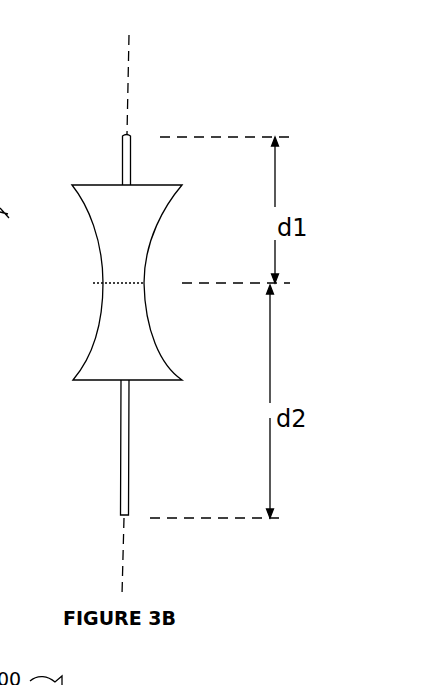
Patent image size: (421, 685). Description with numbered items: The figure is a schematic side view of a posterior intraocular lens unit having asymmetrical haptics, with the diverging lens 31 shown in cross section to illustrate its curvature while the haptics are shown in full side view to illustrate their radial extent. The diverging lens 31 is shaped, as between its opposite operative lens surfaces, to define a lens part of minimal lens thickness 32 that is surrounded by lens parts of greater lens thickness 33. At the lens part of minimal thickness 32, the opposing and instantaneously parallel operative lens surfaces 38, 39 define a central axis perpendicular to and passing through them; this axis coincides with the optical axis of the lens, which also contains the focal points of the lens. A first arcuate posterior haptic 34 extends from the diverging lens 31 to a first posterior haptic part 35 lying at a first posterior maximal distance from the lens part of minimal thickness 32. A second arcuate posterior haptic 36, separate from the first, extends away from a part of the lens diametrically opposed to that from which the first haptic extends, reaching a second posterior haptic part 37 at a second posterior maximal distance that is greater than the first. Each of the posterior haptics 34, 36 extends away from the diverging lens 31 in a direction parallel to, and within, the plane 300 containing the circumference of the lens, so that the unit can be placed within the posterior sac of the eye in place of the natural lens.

The plane containing the circumference of the lens 300 is at (122, 571).
The diverging lens 31 is at (176, 187).
The lens part of minimal lens thickness 32 is at (133, 279).
The lens parts of greater lens thickness 33 is at (149, 362).
The first arcuate posterior haptic 34 is at (132, 146).
The first posterior haptic part 35 is at (123, 131).
The second arcuate posterior haptic 36 is at (130, 455).
The second posterior haptic part 37 is at (125, 521).
The operative lens surface 38 is at (150, 286).
The operative lens surface 39 is at (101, 279).